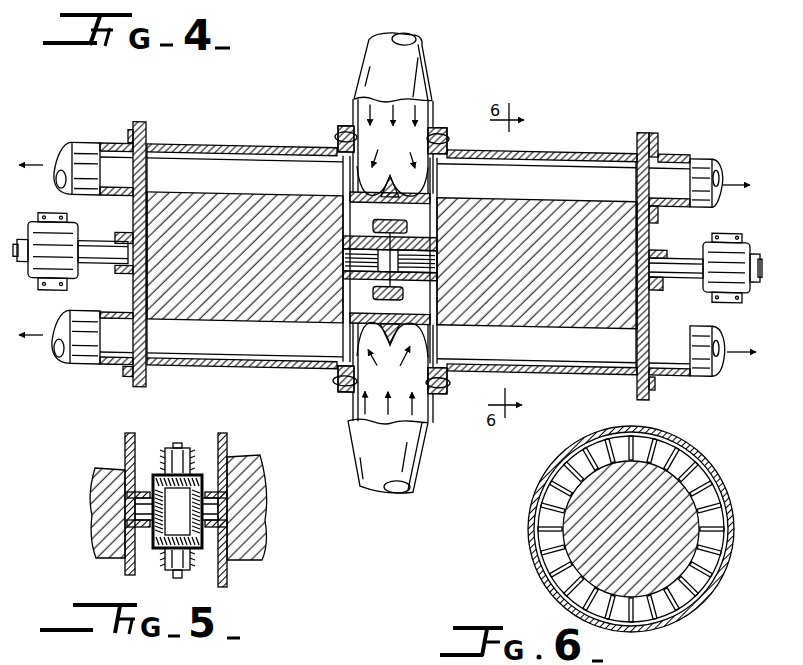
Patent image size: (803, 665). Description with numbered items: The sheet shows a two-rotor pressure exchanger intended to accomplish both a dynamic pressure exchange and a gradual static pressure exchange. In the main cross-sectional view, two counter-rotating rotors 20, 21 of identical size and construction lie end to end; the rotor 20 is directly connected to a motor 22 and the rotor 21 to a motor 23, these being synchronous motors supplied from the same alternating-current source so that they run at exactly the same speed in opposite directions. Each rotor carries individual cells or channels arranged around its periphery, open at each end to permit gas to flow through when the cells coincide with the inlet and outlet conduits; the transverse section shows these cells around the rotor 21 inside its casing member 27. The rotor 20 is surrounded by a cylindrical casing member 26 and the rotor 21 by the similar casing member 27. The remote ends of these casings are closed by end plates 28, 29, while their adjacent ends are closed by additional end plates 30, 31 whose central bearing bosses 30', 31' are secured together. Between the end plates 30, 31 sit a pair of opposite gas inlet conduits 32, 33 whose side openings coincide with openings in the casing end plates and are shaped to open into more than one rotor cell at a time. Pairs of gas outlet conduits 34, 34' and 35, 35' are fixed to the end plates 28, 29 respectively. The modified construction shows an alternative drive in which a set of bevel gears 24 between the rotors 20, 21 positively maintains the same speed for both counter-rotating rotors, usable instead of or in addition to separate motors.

In FIG. 4, the rotor 20 is at (157, 222).
In FIG. 5, the rotor 20 is at (102, 483).
In FIG. 4, the rotor 21 is at (650, 237).
In FIG. 5, the rotor 21 is at (267, 476).
In FIG. 6, the rotor 21 is at (712, 503).
In FIG. 4, the motor 22 is at (37, 265).
In FIG. 4, the motor 23 is at (742, 297).
In FIG. 5, the set of bevel gears 24 is at (199, 447).
In FIG. 4, the cylindrical casing member 26 is at (250, 137).
In FIG. 4, the casing member 27 is at (580, 156).
In FIG. 6, the casing member 27 is at (726, 571).
In FIG. 4, the end plate 28 is at (138, 122).
In FIG. 4, the end plate 29 is at (647, 133).
In FIG. 4, the end plate 30 is at (330, 391).
In FIG. 4, the end plate 31 is at (444, 392).
In FIG. 4, the central bearing boss 30' is at (359, 181).
In FIG. 4, the central bearing boss 31' is at (428, 182).
In FIG. 4, the gas inlet conduit 32 is at (427, 73).
In FIG. 4, the gas inlet conduit 33 is at (423, 451).
In FIG. 4, the gas outlet conduit 34 is at (77, 153).
In FIG. 4, the gas outlet conduit 34' is at (76, 348).
In FIG. 4, the gas outlet conduit 35 is at (708, 168).
In FIG. 4, the gas outlet conduit 35' is at (712, 362).